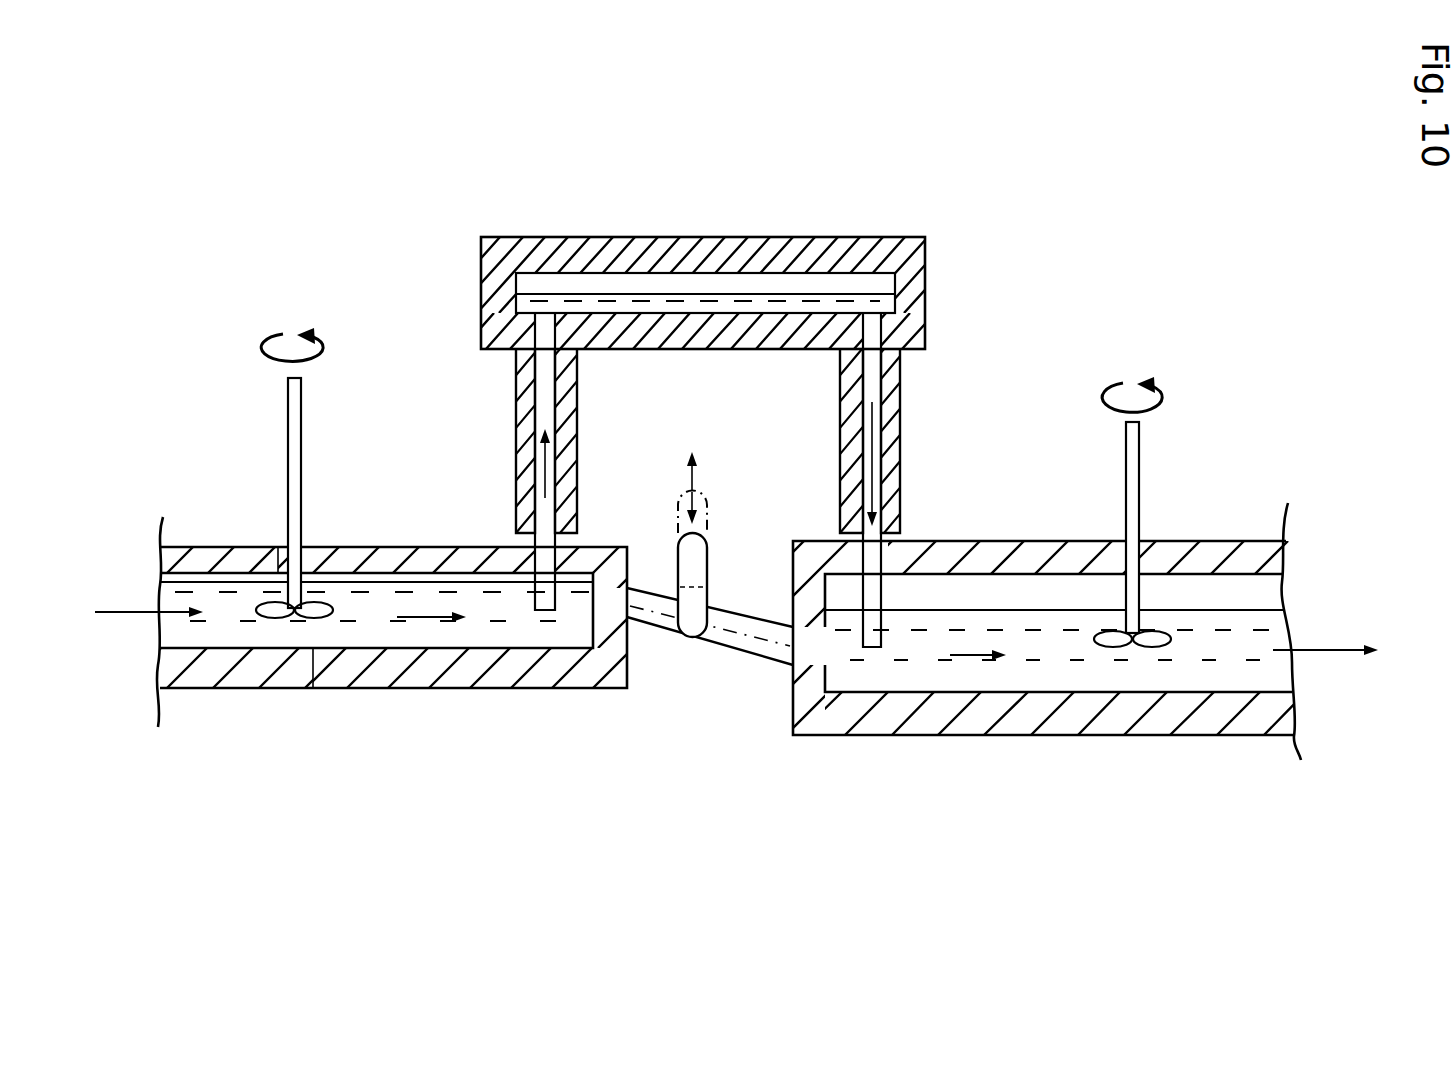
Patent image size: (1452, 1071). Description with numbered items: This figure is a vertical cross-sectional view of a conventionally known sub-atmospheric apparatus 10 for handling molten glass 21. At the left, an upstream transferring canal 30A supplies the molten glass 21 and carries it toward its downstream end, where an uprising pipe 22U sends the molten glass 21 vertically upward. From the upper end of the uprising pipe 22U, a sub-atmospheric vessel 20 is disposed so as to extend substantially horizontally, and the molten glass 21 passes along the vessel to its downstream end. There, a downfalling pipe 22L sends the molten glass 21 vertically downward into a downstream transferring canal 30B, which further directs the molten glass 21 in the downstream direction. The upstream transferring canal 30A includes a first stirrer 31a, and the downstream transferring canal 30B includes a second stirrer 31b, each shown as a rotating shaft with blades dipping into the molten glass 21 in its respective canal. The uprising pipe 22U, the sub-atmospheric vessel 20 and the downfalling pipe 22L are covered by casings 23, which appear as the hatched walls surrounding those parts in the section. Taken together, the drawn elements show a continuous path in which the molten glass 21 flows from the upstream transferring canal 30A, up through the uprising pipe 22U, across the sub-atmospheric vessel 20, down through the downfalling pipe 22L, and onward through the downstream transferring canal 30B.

The sub-atmospheric apparatus 10 is at (717, 167).
The sub-atmospheric vessel 20 is at (807, 226).
The molten glass 21 is at (481, 322).
The uprising pipe 22U is at (543, 413).
The downfalling pipe 22L is at (872, 403).
The casings 23 is at (607, 237).
The upstream transferring canal 30A is at (235, 528).
The downstream transferring canal 30B is at (1237, 538).
The first stirrer 31a is at (300, 455).
The second stirrer 31b is at (1138, 483).